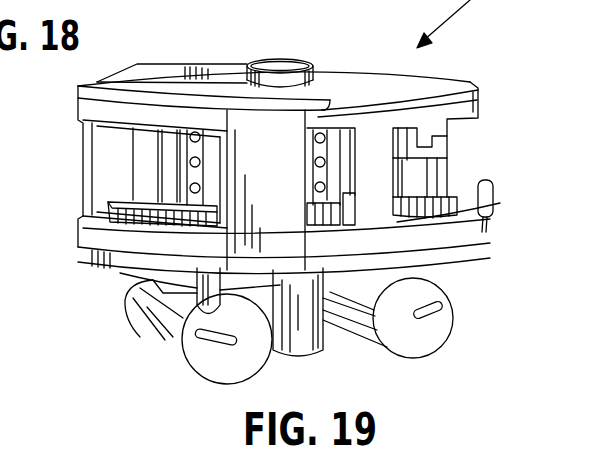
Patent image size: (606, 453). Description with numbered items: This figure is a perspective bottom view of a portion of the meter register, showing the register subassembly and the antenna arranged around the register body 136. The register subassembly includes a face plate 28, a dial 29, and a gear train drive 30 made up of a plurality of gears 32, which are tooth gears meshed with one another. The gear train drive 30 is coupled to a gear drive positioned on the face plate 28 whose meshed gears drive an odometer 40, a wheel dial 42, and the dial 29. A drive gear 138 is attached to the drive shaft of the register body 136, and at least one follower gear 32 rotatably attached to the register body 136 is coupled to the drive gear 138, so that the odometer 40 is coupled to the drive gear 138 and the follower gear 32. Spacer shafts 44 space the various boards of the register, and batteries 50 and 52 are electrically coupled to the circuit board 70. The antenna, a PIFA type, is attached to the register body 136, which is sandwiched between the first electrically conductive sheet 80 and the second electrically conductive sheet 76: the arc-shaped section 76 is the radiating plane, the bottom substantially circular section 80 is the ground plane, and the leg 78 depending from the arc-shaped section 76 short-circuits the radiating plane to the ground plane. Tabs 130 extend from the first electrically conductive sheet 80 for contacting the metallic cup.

The face plate 28 is at (433, 80).
The dial 29 is at (180, 62).
The wheel dial 42 is at (313, 68).
The arc-shaped section 76 is at (322, 108).
The leg 78 is at (280, 168).
The spacer shafts 44 is at (80, 197).
The odometer 40 is at (186, 146).
The gears 32 is at (133, 214).
The register body 136 is at (468, 217).
The gear train drive 30 is at (460, 200).
The bottom substantially circular section 80 is at (484, 245).
The circuit board 70 is at (467, 263).
The tabs 130 is at (157, 296).
The battery 50 is at (186, 362).
The battery 52 is at (440, 347).
The drive gear 138 is at (333, 220).